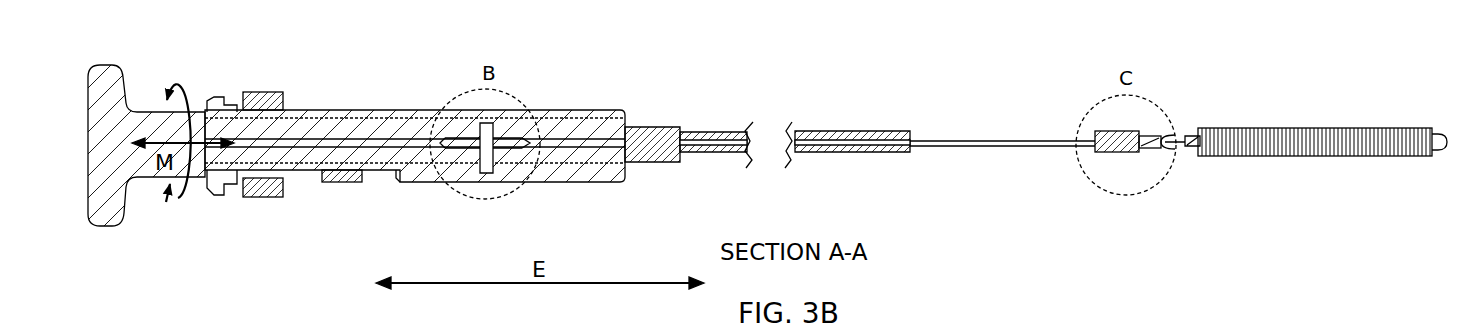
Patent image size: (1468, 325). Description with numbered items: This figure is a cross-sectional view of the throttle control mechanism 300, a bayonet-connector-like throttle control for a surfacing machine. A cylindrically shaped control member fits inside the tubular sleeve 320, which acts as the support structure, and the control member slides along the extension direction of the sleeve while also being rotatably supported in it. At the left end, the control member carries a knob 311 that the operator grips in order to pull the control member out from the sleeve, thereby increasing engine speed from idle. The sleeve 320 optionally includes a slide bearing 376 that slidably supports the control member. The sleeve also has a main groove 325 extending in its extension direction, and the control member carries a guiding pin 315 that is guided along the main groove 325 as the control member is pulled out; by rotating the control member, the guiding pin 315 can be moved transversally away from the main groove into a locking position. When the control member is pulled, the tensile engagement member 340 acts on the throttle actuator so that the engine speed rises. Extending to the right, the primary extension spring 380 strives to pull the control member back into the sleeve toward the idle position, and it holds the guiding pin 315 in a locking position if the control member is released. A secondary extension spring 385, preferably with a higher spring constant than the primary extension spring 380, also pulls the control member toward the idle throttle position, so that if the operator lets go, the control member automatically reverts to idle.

The throttle control mechanism 300 is at (188, 54).
The knob 311 is at (112, 227).
The guiding pin 315 is at (487, 182).
The sleeve 320 is at (333, 182).
The main groove 325 is at (412, 182).
The tensile engagement member 340 is at (979, 143).
The slide bearing 376 is at (210, 176).
The primary extension spring 380 is at (1332, 146).
The secondary extension spring 385 is at (1113, 155).